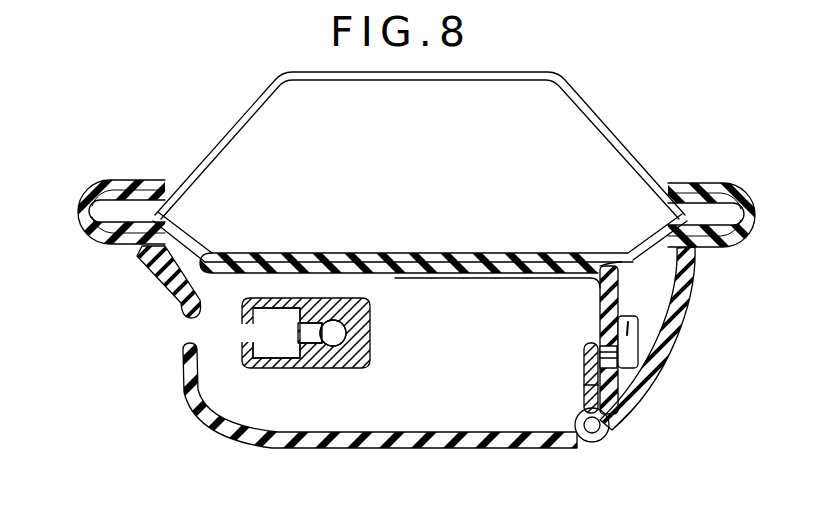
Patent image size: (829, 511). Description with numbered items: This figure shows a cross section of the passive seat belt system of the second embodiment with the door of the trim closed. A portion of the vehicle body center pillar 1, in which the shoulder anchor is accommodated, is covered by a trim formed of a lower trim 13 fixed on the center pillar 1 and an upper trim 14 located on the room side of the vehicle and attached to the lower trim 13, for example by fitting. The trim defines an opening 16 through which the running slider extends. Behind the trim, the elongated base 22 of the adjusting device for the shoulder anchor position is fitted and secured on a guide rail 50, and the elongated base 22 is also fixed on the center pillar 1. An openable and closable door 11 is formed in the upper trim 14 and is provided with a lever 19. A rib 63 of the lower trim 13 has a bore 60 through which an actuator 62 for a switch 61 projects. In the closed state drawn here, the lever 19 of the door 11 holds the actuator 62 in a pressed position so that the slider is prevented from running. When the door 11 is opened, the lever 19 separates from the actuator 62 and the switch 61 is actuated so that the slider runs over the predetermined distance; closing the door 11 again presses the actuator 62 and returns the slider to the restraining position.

The center pillar 1 is at (572, 93).
The door 11 is at (527, 447).
The lower trim 13 is at (618, 288).
The upper trim 14 is at (658, 375).
The opening 16 is at (192, 328).
The lever 19 is at (590, 387).
The elongated base 22 is at (347, 297).
The guide rail 50 is at (321, 282).
The bore 60 is at (592, 342).
The switch 61 is at (640, 328).
The actuator 62 is at (628, 373).
The rib 63 is at (602, 293).